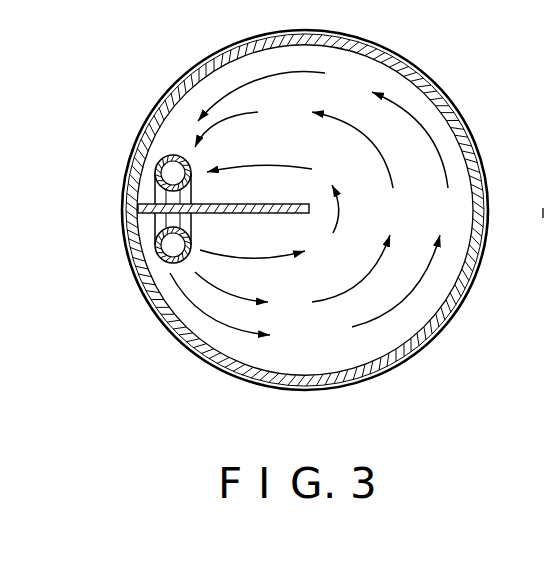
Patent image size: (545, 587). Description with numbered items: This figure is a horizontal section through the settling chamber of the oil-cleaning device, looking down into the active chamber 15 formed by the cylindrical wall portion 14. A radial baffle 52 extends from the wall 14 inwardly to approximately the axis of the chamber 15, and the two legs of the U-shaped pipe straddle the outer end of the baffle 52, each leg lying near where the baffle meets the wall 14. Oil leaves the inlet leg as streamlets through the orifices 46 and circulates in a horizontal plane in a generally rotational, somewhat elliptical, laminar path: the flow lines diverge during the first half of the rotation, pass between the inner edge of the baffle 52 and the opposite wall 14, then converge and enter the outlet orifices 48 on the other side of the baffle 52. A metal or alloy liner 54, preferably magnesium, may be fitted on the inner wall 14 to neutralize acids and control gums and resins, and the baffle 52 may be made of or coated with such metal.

The cylindrical wall portion 14 is at (384, 373).
The active chamber 15 is at (455, 202).
The inlet orifices 46 is at (188, 258).
The outlet orifices 48 is at (187, 160).
The baffle 52 is at (237, 214).
The liner 54 is at (320, 375).